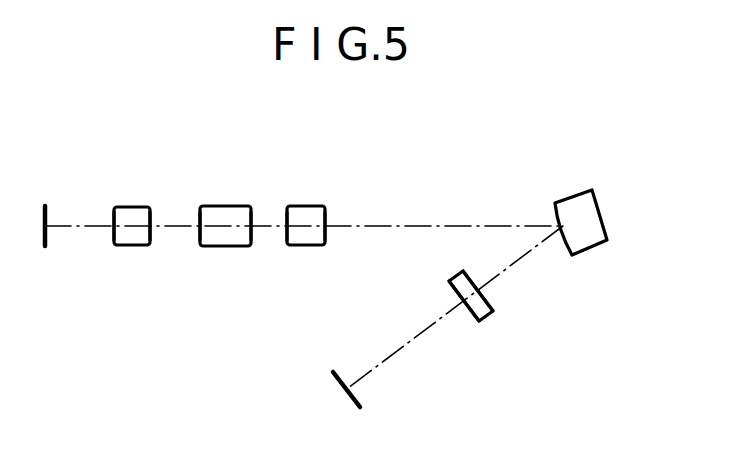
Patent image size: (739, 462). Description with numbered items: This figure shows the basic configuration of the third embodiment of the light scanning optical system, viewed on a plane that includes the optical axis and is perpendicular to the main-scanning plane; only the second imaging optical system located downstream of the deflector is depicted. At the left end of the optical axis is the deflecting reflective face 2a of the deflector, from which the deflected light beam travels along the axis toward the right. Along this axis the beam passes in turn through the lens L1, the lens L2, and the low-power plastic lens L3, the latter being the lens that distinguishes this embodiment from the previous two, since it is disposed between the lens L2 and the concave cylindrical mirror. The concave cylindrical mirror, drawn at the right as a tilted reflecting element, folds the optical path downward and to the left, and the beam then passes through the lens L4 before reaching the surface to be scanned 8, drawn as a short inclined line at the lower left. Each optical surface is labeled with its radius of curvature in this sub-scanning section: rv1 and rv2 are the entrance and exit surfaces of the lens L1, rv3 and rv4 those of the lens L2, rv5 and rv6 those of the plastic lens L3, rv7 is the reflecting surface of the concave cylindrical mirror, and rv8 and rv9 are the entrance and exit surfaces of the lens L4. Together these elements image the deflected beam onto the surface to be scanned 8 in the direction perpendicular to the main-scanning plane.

The deflecting reflective face 2a is at (45, 242).
The first lens L1 is at (128, 210).
The third lens L2 is at (227, 213).
The plastic lens L3 is at (307, 213).
The fourth lens L4 is at (458, 277).
The radius of curvature of first surface of lens L1 rv1 is at (114, 212).
The radius of curvature of second surface of lens L1 rv2 is at (150, 212).
The radius of curvature of first surface of lens L2 rv3 is at (200, 215).
The radius of curvature of second surface of lens L2 rv4 is at (251, 215).
The radius of curvature of first surface of lens L3 rv5 is at (290, 245).
The radius of curvature of second surface of lens L3 rv6 is at (323, 245).
The radius of curvature of concave cylindrical mirror rv7 is at (573, 245).
The radius of curvature of first surface of lens L4 rv8 is at (493, 304).
The radius of curvature of second surface of lens L4 rv9 is at (476, 321).
The surface to be scanned 8 is at (358, 393).